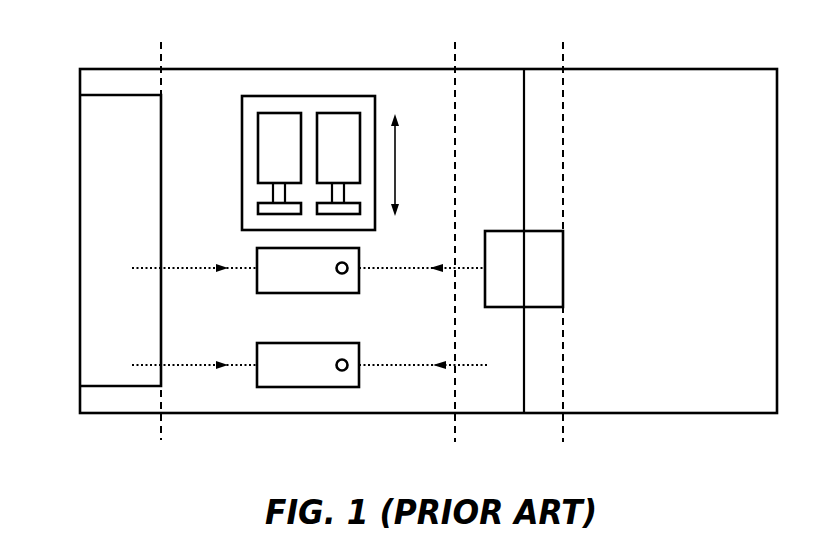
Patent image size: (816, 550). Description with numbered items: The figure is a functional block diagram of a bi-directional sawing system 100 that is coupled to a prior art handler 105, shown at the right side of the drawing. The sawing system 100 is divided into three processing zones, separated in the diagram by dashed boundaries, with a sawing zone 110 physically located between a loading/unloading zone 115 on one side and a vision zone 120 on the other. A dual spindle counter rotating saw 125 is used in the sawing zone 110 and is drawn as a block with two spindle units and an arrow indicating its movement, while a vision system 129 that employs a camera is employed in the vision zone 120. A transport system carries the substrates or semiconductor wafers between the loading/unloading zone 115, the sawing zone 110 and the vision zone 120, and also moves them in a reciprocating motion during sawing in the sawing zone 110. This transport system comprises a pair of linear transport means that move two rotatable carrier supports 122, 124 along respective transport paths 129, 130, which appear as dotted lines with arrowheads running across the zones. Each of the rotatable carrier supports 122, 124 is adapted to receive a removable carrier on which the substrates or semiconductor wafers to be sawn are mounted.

The sawing system 100 is at (401, 60).
The handler 105 is at (665, 72).
The sawing zone 110 is at (307, 418).
The loading/unloading zone 115 is at (509, 420).
The vision zone 120 is at (122, 418).
The rotatable carrier support 122 is at (260, 273).
The rotatable carrier support 124 is at (260, 369).
The dual spindle counter rotating saw 125 is at (311, 100).
The vision system 129 is at (80, 243).
The transport path 130 is at (403, 362).